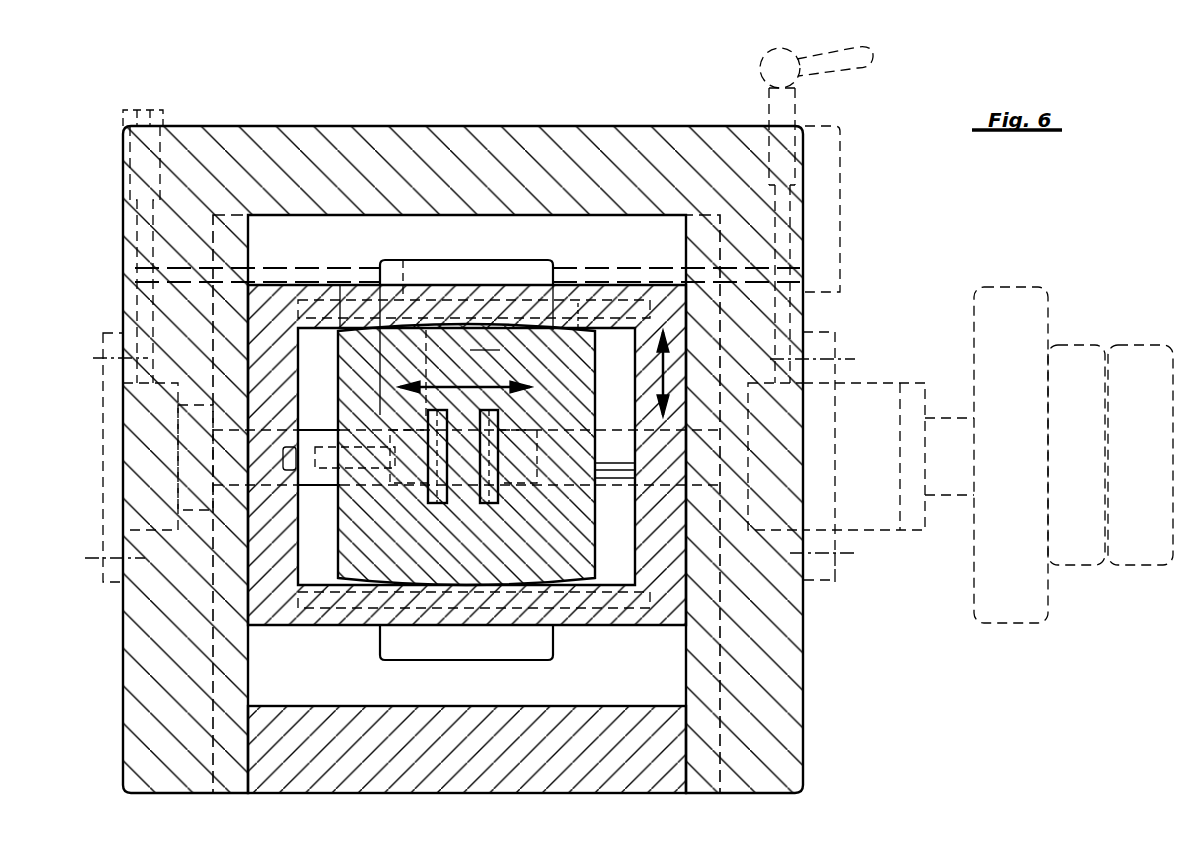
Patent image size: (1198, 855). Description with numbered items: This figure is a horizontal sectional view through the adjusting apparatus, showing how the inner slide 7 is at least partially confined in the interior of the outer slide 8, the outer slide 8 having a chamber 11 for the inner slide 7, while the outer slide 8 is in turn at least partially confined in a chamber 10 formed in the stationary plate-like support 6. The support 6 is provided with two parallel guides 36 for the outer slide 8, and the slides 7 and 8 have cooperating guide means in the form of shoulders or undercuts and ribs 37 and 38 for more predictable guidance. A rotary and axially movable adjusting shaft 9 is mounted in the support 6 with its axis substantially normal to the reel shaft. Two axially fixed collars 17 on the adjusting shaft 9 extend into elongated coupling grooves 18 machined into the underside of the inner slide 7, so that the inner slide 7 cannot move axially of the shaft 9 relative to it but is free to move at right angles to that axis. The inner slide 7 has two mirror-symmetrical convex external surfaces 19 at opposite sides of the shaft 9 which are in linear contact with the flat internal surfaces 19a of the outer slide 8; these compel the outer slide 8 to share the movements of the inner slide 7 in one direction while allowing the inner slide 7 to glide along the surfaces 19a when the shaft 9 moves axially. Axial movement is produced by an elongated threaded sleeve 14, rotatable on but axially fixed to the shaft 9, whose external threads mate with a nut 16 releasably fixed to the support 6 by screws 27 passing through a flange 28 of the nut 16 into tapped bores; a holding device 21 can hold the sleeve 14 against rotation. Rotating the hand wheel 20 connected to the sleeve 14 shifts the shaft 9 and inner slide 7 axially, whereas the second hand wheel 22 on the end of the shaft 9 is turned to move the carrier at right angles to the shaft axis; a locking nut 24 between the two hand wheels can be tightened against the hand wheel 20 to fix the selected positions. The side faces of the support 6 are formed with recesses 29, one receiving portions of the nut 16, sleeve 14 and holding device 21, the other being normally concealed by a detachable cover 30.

The support 6 is at (792, 712).
The first carriage or slide 7 is at (590, 380).
The second carriage or slide 8 is at (625, 300).
The adjusting shaft 9 is at (612, 474).
The chamber 10 is at (662, 676).
The chamber 11 is at (612, 576).
The threaded sleeve 14 is at (948, 496).
The nut 16 is at (880, 515).
The collars 17 is at (432, 497).
The coupling grooves 18 is at (500, 352).
The convex external surfaces 19 is at (578, 330).
The flat internal surfaces 19a is at (319, 442).
The hand wheel 20 is at (1010, 300).
The holding device 21 is at (790, 110).
The second hand wheel 22 is at (1140, 360).
The locking or holding nut 24 is at (1078, 360).
The screws 27 is at (845, 360).
The flange 28 is at (822, 332).
The recess 29 is at (112, 398).
The cover 30 is at (103, 441).
The guides 36 is at (250, 238).
The shoulders or undercuts and ribs 37 is at (345, 330).
The shoulders or undercuts and ribs 38 is at (403, 300).